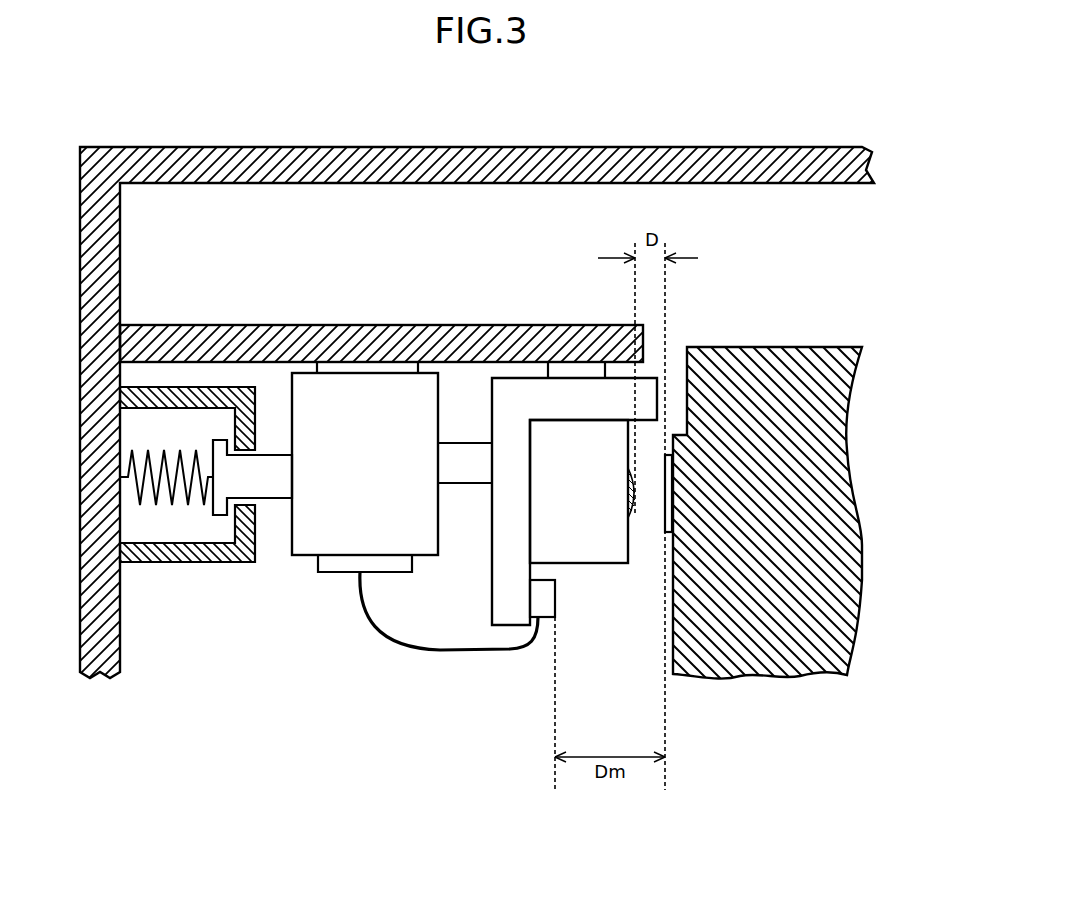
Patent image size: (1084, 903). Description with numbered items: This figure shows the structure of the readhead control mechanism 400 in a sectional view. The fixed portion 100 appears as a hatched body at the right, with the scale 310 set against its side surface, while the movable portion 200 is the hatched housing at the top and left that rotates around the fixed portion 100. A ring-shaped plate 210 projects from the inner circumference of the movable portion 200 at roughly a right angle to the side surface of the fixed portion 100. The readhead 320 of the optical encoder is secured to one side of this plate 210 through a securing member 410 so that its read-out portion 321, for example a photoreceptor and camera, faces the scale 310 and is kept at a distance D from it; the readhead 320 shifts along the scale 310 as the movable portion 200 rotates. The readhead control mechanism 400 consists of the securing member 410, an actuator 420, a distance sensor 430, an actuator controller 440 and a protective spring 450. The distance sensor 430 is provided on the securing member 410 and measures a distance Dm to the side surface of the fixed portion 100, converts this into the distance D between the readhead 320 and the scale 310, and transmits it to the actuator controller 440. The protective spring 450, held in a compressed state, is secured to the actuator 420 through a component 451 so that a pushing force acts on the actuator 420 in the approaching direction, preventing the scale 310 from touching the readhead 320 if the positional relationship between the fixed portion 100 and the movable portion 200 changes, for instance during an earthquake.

The fixed portion 100 is at (815, 675).
The movable portion 200 is at (255, 147).
The plate 210 is at (395, 325).
The scale 310 is at (668, 475).
The readhead 320 is at (660, 556).
The read-out portion 321 is at (636, 498).
The readhead control mechanism 400 is at (528, 564).
The securing member 410 is at (500, 625).
The actuator 420 is at (305, 555).
The distance sensor 430 is at (547, 617).
The actuator controller 440 is at (345, 572).
The protective spring 450 is at (172, 505).
The component 451 is at (246, 577).